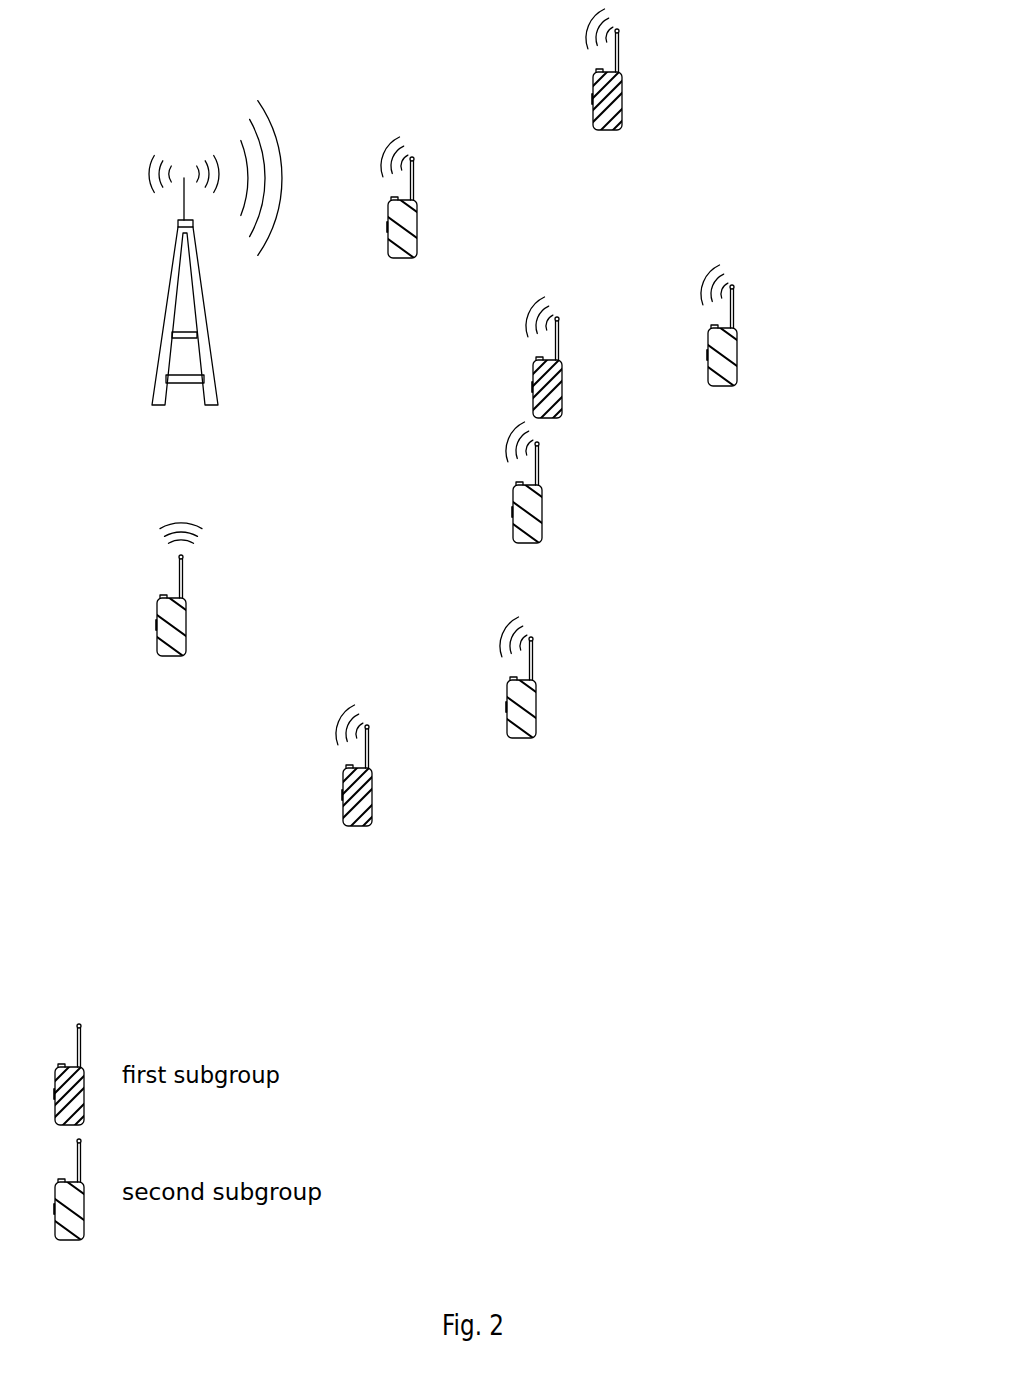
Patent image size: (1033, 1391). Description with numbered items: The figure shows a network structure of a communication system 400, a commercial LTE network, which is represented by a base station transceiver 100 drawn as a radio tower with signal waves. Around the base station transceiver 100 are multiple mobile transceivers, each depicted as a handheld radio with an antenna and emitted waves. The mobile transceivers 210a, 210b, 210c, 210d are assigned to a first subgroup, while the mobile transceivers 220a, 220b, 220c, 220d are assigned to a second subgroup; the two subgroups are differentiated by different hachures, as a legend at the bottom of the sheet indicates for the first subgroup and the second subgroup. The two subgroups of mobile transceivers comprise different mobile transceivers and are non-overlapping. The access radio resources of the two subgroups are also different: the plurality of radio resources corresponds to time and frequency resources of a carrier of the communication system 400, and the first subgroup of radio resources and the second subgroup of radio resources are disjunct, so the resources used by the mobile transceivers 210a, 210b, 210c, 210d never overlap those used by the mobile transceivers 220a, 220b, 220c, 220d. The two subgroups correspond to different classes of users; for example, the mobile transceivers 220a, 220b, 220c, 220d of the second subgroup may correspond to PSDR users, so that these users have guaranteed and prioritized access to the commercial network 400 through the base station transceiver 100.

The base station transceiver 100 is at (155, 360).
The mobile transceiver 210a is at (655, 74).
The mobile transceiver 210b is at (593, 362).
The mobile transceiver 210c is at (567, 685).
The mobile transceiver 210d is at (404, 771).
The mobile transceiver 220a is at (220, 595).
The mobile transceiver 220b is at (575, 488).
The mobile transceiver 220c is at (770, 331).
The mobile transceiver 220d is at (450, 203).
The communication system 400 is at (555, 911).